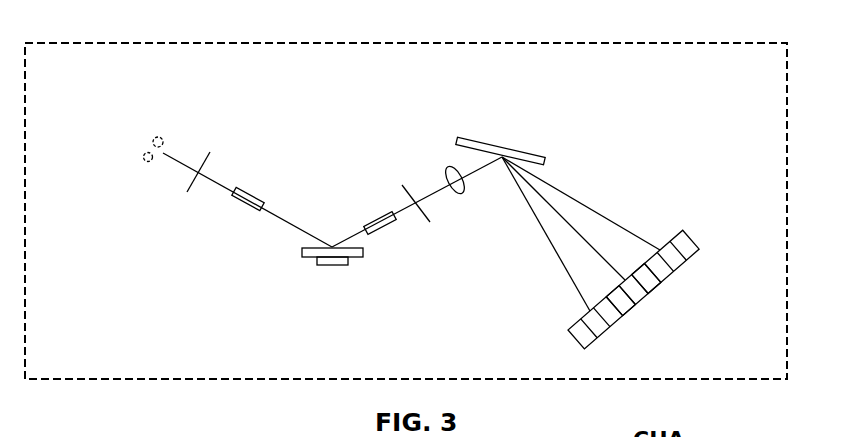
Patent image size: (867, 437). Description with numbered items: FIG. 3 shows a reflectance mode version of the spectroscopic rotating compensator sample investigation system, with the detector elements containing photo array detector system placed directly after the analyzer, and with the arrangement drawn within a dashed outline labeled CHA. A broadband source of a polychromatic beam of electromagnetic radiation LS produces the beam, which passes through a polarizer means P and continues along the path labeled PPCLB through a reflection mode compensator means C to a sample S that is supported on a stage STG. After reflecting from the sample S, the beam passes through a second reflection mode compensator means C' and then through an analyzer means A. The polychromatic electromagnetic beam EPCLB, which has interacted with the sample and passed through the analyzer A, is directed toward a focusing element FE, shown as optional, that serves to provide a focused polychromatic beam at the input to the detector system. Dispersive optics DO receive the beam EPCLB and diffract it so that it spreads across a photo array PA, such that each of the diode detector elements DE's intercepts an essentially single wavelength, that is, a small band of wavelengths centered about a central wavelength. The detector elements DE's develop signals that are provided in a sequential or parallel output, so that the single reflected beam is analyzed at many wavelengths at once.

The chamber housing CHA is at (619, 40).
The source of a polychromatic beam of electromagnetic radiation LS is at (142, 145).
The polarizer means P is at (205, 160).
The polarized probe collimated light beam PPCLB is at (224, 177).
The reflection mode system compensator means C is at (248, 207).
The sample S is at (296, 247).
The sample supporting stage STG is at (325, 268).
The reflection mode system compensator means C' is at (383, 231).
The analyzer means A is at (420, 214).
The polychromatic electromagnetic beam EPCLB is at (428, 183).
The focusing element FE is at (461, 191).
The dispersive optics DO is at (500, 145).
The photo array PA is at (570, 310).
The detector elements DE's is at (662, 314).